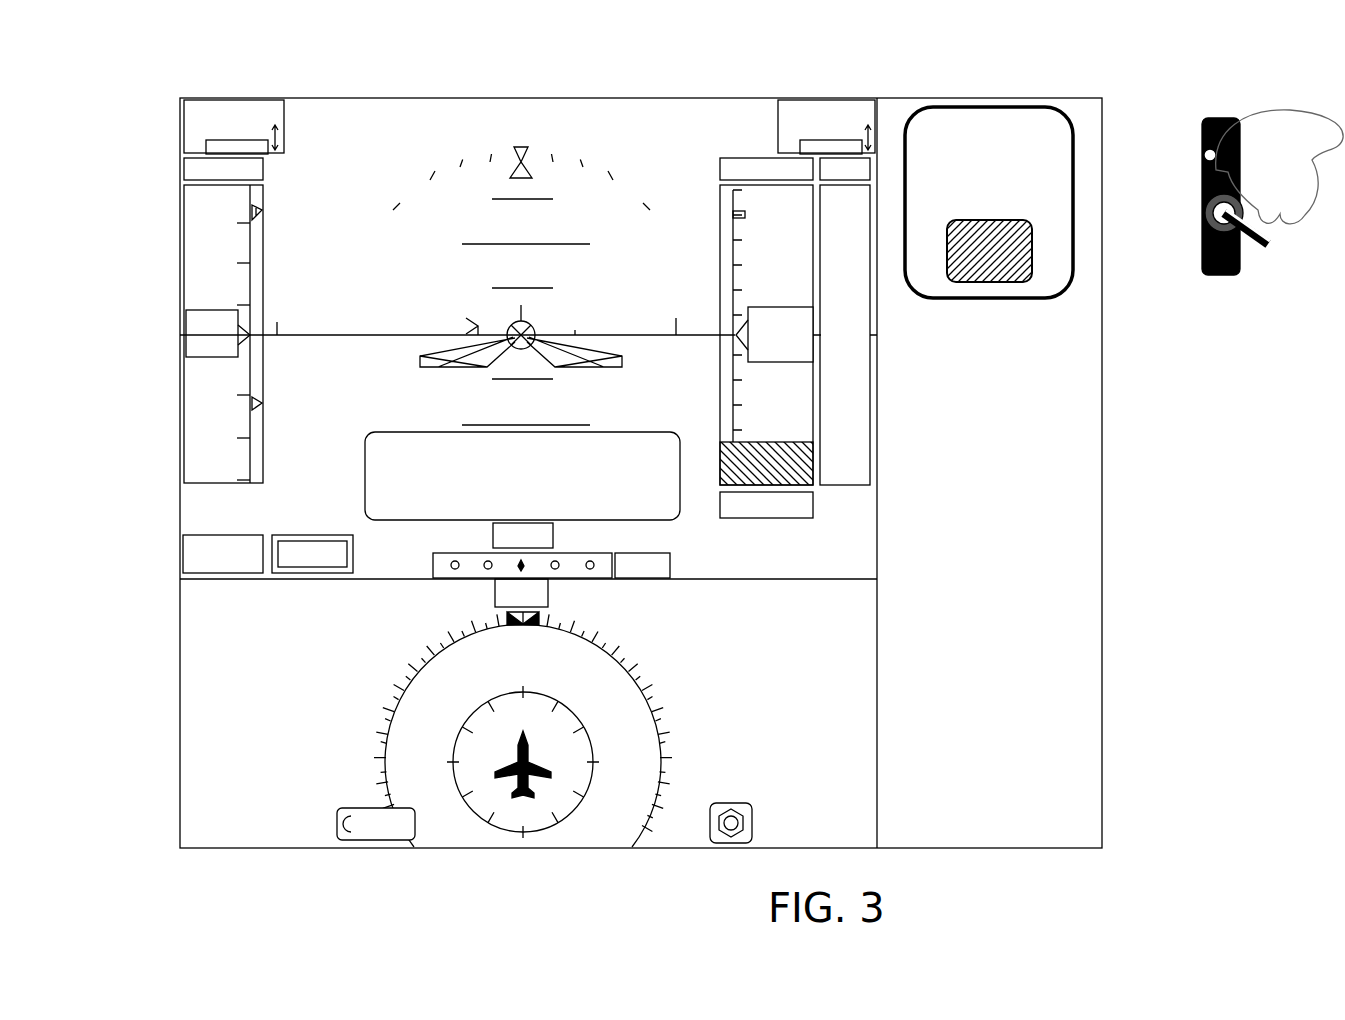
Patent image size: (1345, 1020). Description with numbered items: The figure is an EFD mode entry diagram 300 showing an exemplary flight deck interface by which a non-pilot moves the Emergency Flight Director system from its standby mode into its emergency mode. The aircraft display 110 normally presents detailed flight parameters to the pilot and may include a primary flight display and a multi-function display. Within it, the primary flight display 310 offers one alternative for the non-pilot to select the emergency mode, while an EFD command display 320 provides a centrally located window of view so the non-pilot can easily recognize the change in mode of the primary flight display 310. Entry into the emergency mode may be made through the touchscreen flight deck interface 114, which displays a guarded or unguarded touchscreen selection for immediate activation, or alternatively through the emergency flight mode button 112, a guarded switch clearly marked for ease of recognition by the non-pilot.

The EFD mode entry diagram 300 is at (183, 88).
The aircraft display 110 is at (523, 91).
The primary flight display 310 is at (408, 115).
The EFD command display 320 is at (365, 484).
The touchscreen flight deck interface 114 is at (972, 114).
The emergency flight mode button 112 is at (1245, 117).